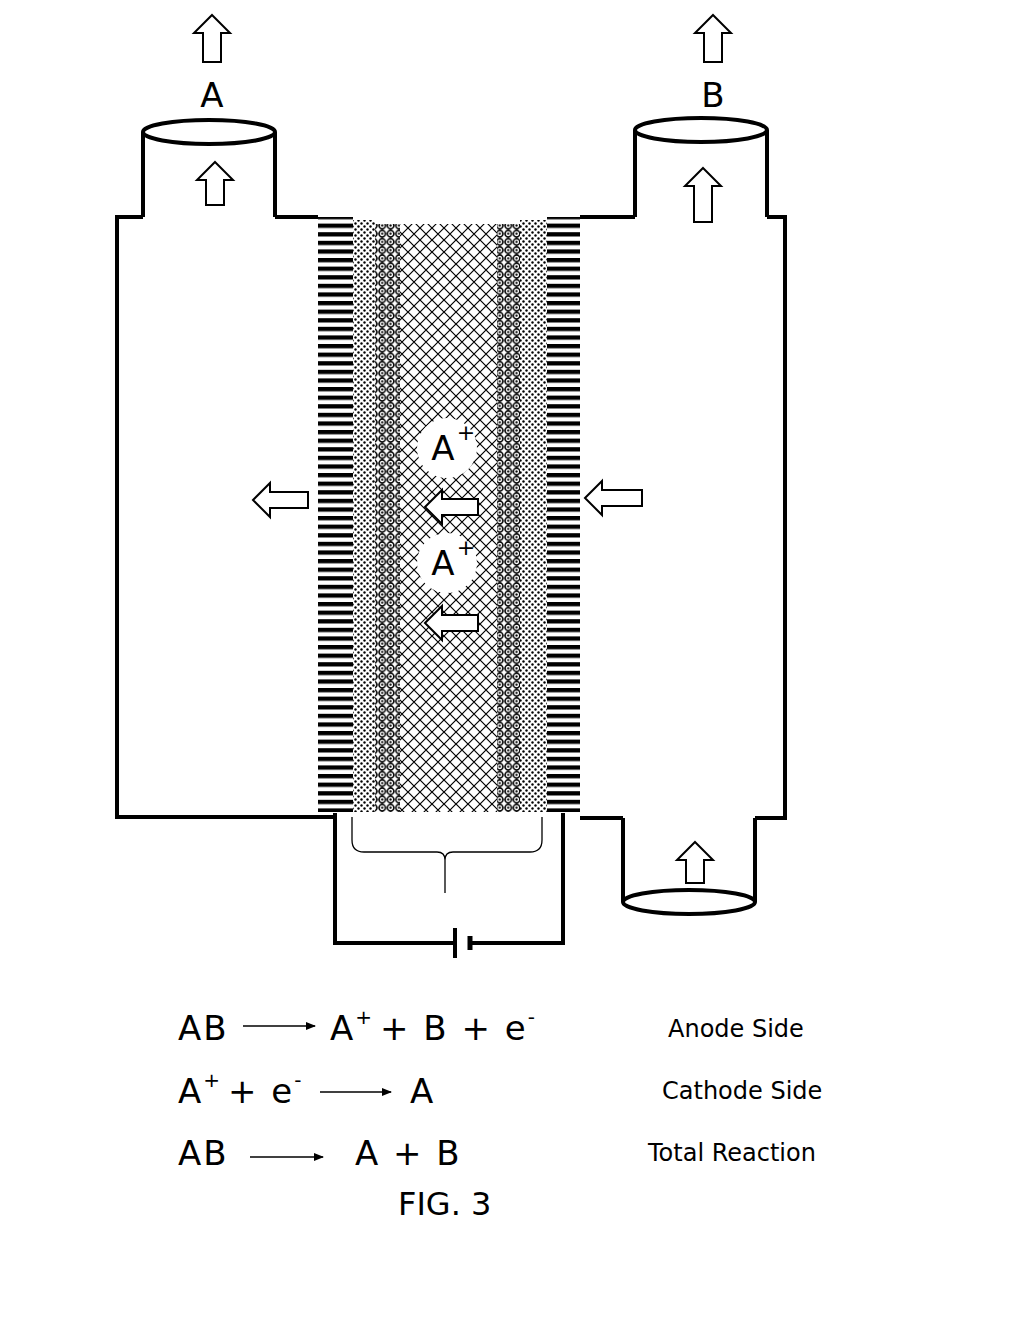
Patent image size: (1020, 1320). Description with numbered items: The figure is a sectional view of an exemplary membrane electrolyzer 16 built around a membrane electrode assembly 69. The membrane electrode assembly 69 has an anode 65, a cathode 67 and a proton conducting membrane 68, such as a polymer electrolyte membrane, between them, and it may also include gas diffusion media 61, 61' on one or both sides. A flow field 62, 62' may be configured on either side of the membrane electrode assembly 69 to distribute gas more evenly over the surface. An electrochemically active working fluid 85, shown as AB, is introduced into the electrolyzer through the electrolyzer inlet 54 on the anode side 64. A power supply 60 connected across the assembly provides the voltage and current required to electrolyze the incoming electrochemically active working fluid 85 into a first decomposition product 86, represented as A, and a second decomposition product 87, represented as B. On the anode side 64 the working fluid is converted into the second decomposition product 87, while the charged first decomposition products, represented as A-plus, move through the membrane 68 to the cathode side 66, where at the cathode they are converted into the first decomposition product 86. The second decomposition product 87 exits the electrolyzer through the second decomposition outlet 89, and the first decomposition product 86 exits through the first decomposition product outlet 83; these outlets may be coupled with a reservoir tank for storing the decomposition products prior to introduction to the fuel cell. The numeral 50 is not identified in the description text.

The electrolyzer 16 is at (777, 126).
The anode inlet 50 is at (635, 850).
The electrolyzer inlet 54 is at (715, 870).
The power supply 60 is at (455, 948).
The gas diffusion media 61 is at (370, 458).
The gas diffusion media 61' is at (544, 459).
The flow field 62 is at (337, 447).
The flow field 62' is at (584, 445).
The anode side 64 is at (590, 338).
The anode 65 is at (512, 234).
The cathode side 66 is at (318, 325).
The cathode 67 is at (388, 234).
The proton conducting membrane 68 is at (447, 230).
The membrane electrode assembly 69 is at (445, 893).
The first decomposition product outlet 83 is at (190, 160).
The electrochemically active working fluid 85 is at (733, 945).
The first decomposition product 86 is at (165, 462).
The second decomposition product 87 is at (727, 248).
The second decomposition outlet 89 is at (728, 160).